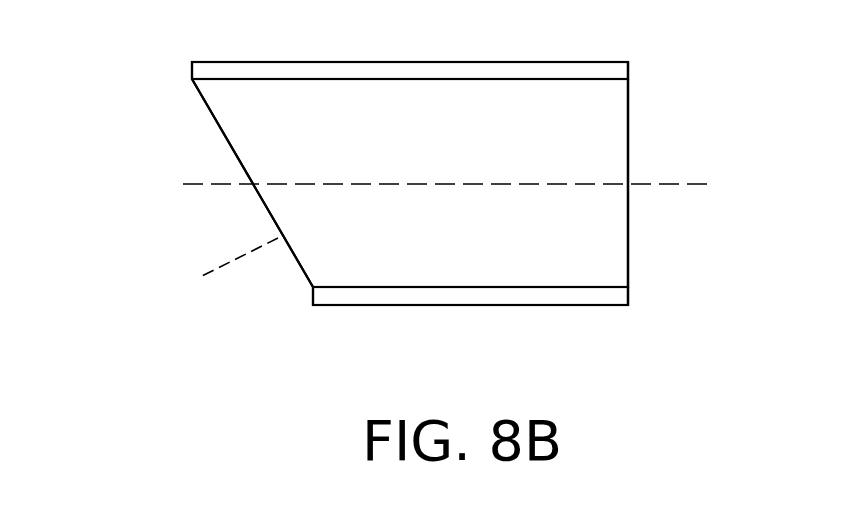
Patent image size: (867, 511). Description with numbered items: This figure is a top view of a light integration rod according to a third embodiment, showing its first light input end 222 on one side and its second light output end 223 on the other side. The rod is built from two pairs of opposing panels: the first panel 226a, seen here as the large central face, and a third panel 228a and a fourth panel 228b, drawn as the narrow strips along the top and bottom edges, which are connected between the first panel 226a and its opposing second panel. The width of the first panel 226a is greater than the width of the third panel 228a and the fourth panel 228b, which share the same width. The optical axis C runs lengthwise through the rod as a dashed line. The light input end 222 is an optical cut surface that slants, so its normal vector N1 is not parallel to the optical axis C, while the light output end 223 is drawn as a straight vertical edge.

The light input end 222 is at (183, 128).
The light output end 223 is at (636, 200).
The first panel 226a is at (587, 140).
The third panel 228a is at (607, 72).
The fourth panel 228b is at (605, 296).
The optical axis C is at (429, 188).
The normal vector N1 is at (210, 269).